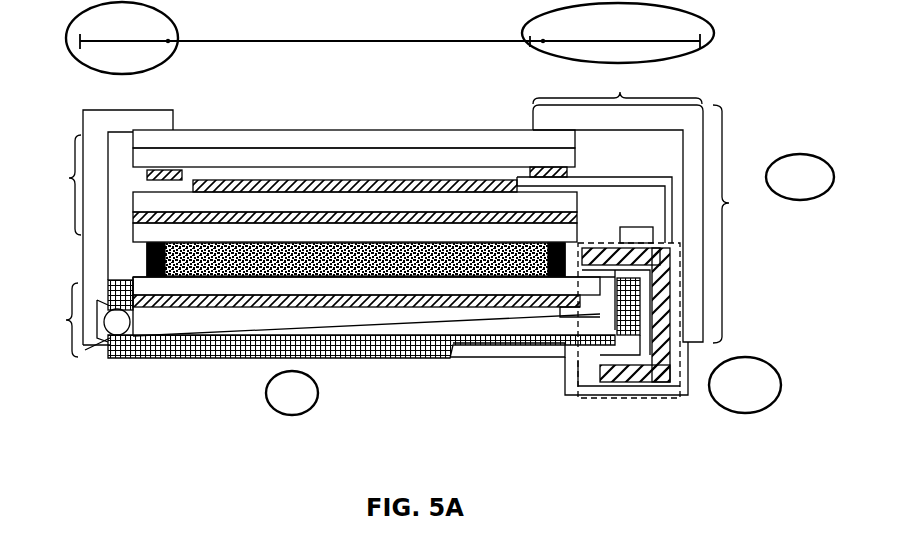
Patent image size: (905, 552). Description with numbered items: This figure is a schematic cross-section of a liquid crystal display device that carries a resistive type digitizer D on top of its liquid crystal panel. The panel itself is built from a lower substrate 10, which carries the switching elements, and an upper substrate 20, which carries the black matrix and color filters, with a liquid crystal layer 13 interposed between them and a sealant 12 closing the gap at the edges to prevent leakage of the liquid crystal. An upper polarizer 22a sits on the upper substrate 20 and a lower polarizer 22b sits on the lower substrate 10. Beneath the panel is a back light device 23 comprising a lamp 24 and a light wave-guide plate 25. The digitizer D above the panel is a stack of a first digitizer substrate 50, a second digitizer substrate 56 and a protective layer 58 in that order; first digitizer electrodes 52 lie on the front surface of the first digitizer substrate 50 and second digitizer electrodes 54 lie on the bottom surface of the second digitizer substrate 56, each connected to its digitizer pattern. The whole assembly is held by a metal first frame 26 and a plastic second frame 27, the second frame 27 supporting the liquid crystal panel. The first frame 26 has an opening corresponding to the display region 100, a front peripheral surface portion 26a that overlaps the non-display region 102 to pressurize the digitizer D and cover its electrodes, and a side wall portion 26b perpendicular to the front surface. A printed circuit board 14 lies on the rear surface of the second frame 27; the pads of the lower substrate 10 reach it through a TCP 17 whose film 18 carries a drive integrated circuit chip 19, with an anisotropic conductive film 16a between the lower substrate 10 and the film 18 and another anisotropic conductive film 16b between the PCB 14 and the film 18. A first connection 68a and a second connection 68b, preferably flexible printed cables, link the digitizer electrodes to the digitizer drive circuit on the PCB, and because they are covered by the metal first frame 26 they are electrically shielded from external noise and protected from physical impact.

The display region 100 is at (390, 32).
The non-display region 102 is at (390, 38).
The lower substrate 10 is at (337, 290).
The sealant 12 is at (147, 258).
The liquid crystal layer 13 is at (188, 278).
The printed circuit board 14 is at (470, 348).
The anisotropic conductive film 16a is at (603, 262).
The anisotropic conductive film 16b is at (628, 382).
The TCP 17 is at (687, 383).
The film 18 is at (656, 378).
The drive integrated circuit chip 19 is at (655, 238).
The upper substrate 20 is at (140, 232).
The upper polarizer 22a is at (143, 220).
The lower polarizer 22b is at (284, 308).
The back light device 23 is at (86, 318).
The lamp 24 is at (100, 333).
The light wave-guide plate 25 is at (244, 322).
The first frame 26 is at (560, 115).
The front peripheral surface portion 26a is at (617, 83).
The side wall portion 26b is at (739, 224).
The second frame 27 is at (137, 353).
The first digitizer substrate 50 is at (447, 203).
The first digitizer electrodes 52 is at (387, 185).
The second digitizer electrodes 54 is at (200, 173).
The second digitizer substrate 56 is at (300, 157).
The protective layer 58 is at (254, 143).
The first connection 68a is at (570, 396).
The second connection 68b is at (589, 395).
The resistive type digitizer D is at (62, 185).